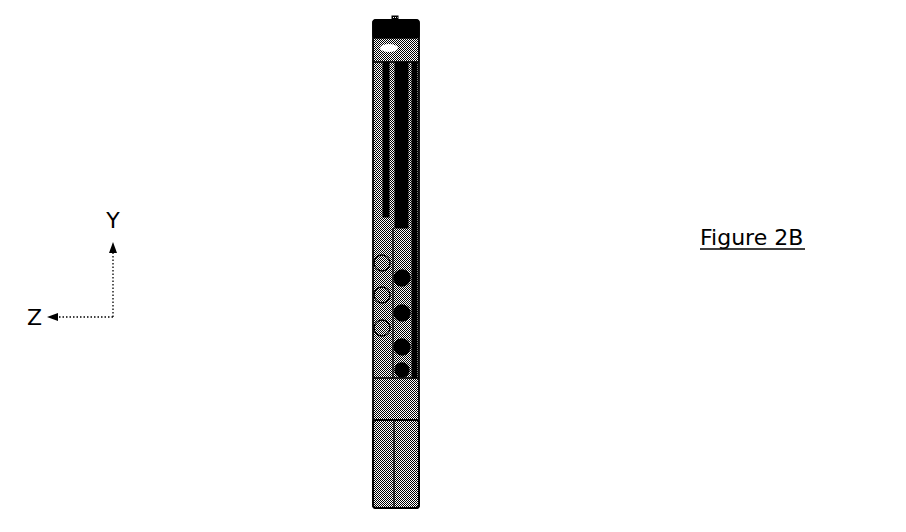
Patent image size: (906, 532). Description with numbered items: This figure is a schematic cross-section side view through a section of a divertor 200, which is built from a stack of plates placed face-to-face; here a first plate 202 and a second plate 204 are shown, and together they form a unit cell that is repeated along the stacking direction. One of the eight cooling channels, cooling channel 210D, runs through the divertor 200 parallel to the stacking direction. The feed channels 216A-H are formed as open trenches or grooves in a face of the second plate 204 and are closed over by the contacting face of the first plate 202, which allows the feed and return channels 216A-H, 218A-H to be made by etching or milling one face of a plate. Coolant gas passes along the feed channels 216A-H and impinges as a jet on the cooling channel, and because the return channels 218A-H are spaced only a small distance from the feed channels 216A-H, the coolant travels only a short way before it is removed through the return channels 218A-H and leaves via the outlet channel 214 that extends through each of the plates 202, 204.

The divertor 200 is at (329, 105).
The first plate 202 is at (373, 466).
The second plate 204 is at (419, 465).
The cooling channel 210D is at (420, 50).
The outlet channel 214 is at (373, 402).
The feed channels 216A-H is at (373, 328).
The return channels 218A-H is at (419, 360).